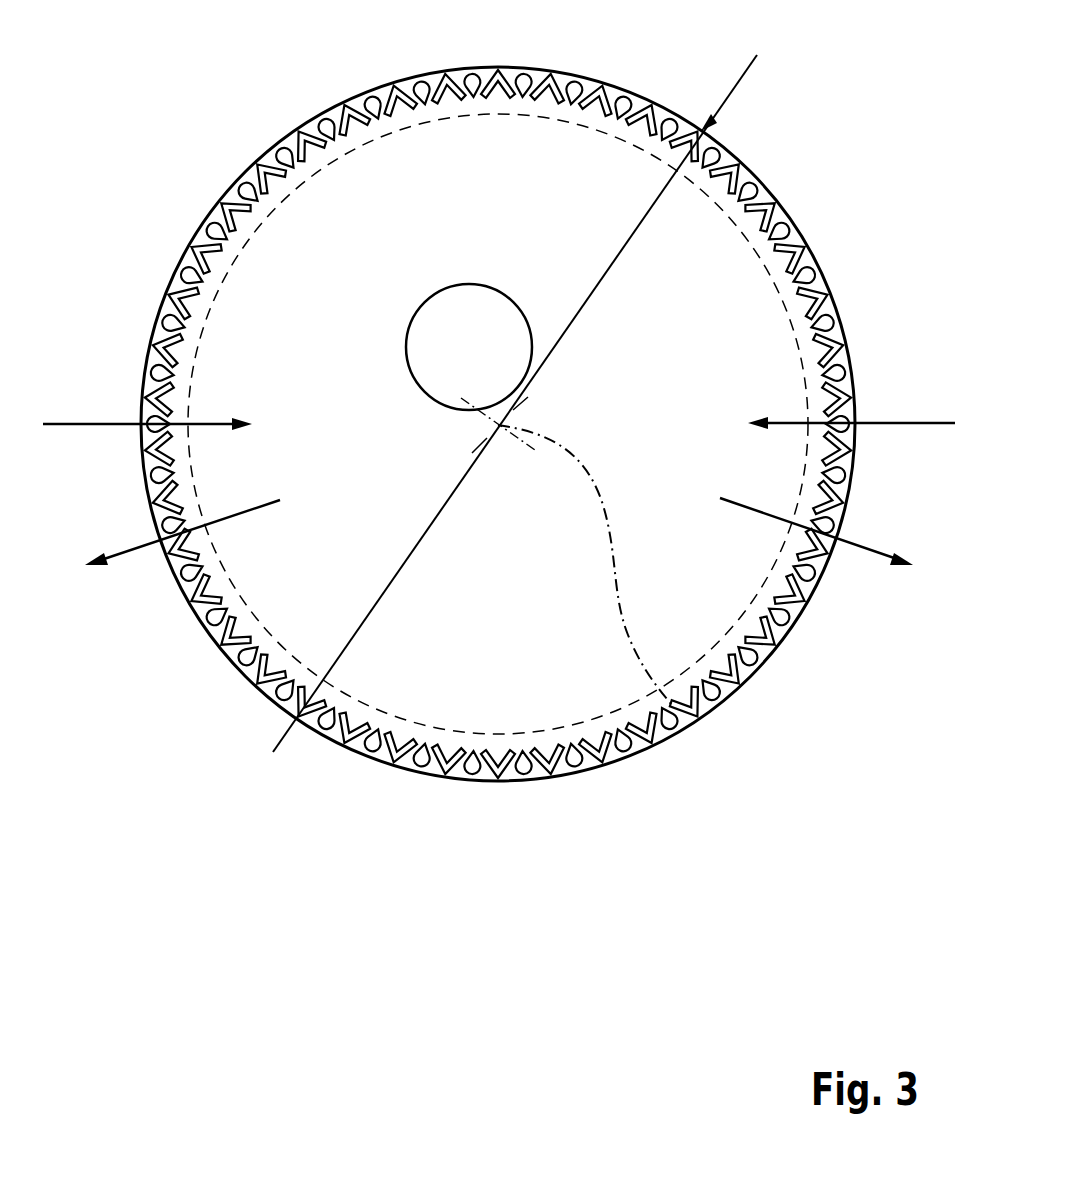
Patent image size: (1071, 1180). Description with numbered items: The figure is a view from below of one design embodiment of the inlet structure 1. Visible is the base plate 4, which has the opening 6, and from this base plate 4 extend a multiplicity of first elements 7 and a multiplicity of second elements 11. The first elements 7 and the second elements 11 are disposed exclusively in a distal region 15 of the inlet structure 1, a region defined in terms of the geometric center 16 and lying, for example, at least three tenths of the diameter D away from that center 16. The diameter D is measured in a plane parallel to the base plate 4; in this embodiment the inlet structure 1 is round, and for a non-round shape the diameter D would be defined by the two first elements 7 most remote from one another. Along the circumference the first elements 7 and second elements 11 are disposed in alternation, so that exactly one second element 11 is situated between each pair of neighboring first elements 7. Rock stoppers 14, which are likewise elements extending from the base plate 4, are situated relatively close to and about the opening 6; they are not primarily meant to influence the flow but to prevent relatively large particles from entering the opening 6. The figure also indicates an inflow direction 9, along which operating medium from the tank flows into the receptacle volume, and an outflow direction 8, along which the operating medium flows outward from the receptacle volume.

The inlet structure 1 is at (198, 130).
The base plate 4 is at (545, 160).
The opening 6 is at (469, 347).
The first elements 7 is at (811, 228).
The outflow direction 8 is at (122, 553).
The inflow direction 9 is at (60, 427).
The second elements 11 is at (813, 270).
The rock stoppers 14 is at (483, 285).
The distal region 15 is at (520, 733).
The geometric center 16 is at (695, 730).
The diameter D is at (730, 92).